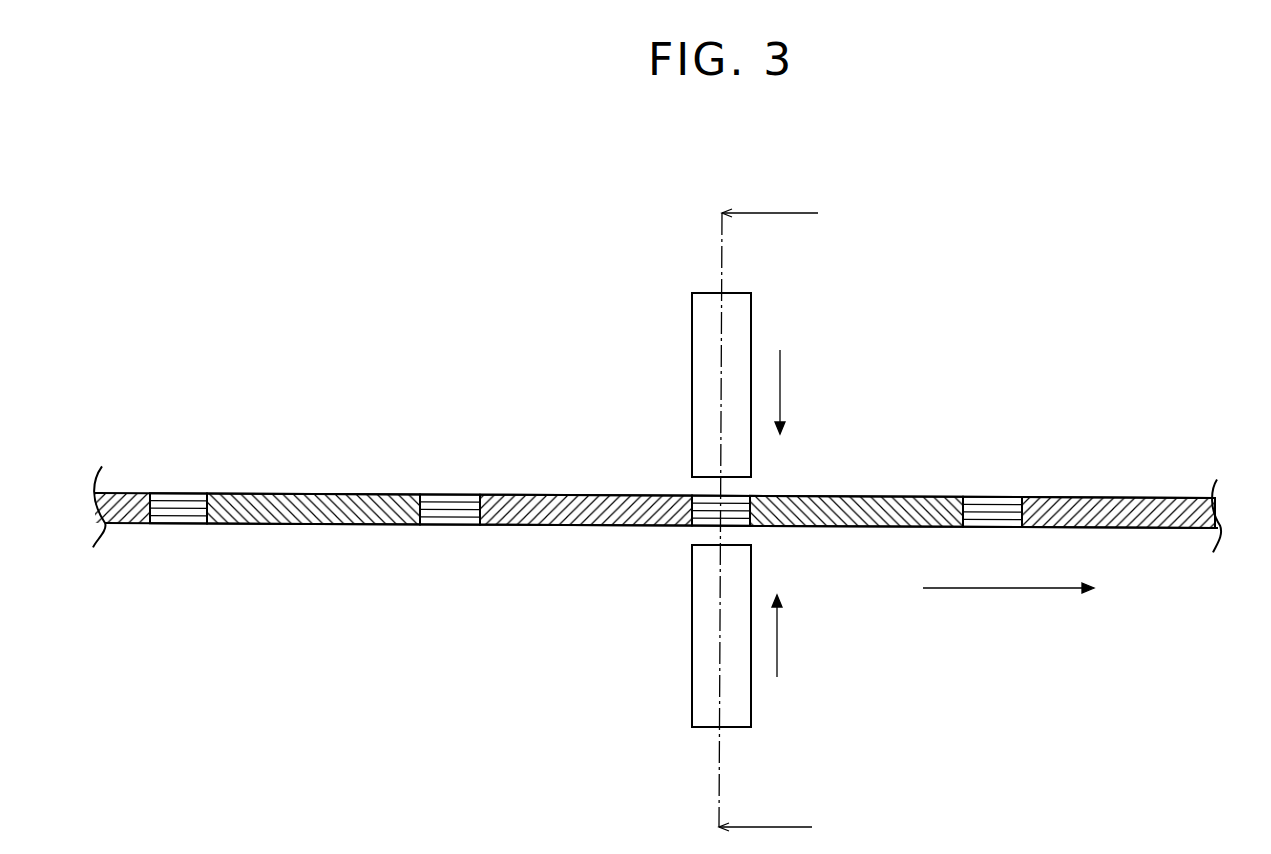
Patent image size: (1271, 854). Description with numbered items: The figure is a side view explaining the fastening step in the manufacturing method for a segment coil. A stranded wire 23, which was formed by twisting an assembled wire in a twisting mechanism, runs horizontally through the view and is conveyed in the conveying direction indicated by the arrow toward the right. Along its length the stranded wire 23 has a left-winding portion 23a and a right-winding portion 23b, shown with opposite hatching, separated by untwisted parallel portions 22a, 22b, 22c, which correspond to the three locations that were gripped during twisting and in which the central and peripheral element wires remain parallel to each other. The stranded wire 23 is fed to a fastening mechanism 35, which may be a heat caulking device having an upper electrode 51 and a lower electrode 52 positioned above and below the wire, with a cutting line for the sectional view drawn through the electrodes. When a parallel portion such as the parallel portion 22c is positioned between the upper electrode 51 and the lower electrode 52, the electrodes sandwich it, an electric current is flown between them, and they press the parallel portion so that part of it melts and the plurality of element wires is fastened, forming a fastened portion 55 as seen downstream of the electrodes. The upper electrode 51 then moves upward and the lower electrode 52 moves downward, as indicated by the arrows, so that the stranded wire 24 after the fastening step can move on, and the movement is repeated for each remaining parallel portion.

The parallel portion 22a is at (178, 493).
The parallel portion 22b is at (448, 493).
The parallel portion 22c is at (735, 528).
The stranded wire 23 is at (366, 572).
The left-winding portion 23a is at (335, 493).
The right-winding portion 23b is at (572, 493).
The stranded wire after the fastening step 24 is at (1160, 582).
The fastening mechanism 35 is at (632, 258).
The upper electrode 51 is at (695, 362).
The lower electrode 52 is at (695, 647).
The fastened portion 55 is at (993, 496).